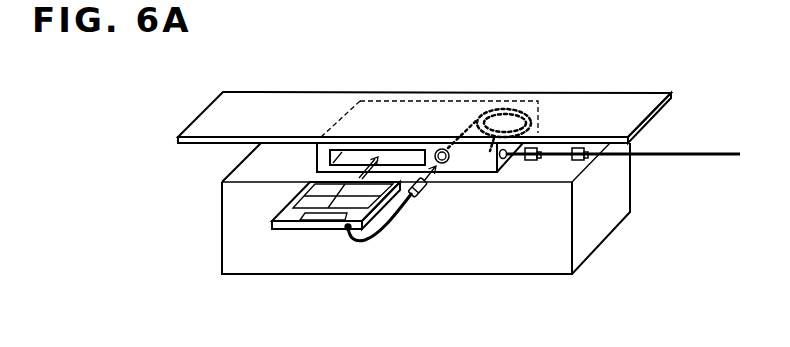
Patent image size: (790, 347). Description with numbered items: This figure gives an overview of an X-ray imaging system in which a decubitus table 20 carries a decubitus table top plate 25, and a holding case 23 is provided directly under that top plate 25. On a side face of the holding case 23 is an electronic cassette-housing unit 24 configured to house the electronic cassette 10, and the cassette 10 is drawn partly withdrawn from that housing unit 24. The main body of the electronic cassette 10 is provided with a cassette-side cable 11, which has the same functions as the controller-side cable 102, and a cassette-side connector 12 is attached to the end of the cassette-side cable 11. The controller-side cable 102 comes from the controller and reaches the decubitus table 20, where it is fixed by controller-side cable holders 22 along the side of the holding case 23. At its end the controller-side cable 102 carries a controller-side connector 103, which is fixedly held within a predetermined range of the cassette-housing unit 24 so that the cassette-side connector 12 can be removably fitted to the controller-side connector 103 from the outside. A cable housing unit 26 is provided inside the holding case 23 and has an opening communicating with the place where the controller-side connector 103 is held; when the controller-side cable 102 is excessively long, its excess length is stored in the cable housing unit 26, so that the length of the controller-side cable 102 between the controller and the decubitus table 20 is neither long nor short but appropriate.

The electronic cassette 10 is at (285, 228).
The cassette-side cable 11 is at (375, 243).
The cassette-side connector 12 is at (423, 192).
The decubitus table 20 is at (527, 260).
The controller-side cable holders 22 is at (532, 162).
The holding case 23 is at (317, 163).
The electronic cassette-housing unit 24 is at (400, 158).
The decubitus table top plate 25 is at (593, 103).
The cable housing unit 26 is at (502, 112).
The controller-side cable 102 is at (705, 152).
The controller-side connector 103 is at (442, 149).